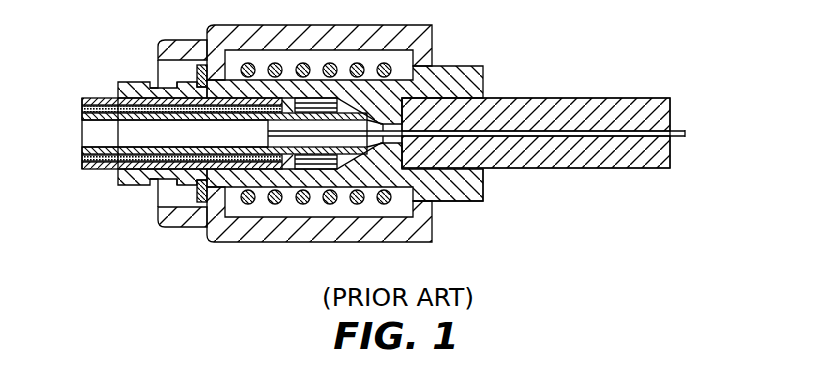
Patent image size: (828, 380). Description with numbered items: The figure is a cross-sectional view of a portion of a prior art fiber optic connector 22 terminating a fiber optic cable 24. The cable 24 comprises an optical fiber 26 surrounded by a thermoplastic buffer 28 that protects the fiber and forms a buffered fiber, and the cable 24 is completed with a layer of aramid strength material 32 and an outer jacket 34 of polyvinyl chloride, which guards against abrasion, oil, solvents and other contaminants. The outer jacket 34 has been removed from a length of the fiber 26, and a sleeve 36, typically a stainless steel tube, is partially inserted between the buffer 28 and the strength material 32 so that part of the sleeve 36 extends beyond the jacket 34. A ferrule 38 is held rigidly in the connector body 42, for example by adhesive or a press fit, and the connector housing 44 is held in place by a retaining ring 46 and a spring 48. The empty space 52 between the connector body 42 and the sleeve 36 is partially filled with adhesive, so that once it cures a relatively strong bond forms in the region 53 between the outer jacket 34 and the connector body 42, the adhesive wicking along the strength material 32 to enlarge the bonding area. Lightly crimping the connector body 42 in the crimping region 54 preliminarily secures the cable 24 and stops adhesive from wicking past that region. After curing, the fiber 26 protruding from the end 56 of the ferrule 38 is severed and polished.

The fiber optic connector 22 is at (373, 139).
The fiber optic cable 24 is at (100, 138).
The optical fiber 26 is at (677, 128).
The thermoplastic buffer 28 is at (118, 173).
The aramid strength material 32 is at (88, 110).
The outer jacket 34 is at (90, 99).
The sleeve 36 is at (357, 112).
The ferrule 38 is at (564, 168).
The connector body 42 is at (465, 203).
The connector housing 44 is at (412, 31).
The retaining ring 46 is at (198, 200).
The spring 48 is at (365, 204).
The empty space 52 is at (309, 154).
The bonding region 53 is at (262, 178).
The crimping region 54 is at (135, 84).
The ferrule end 56 is at (677, 139).